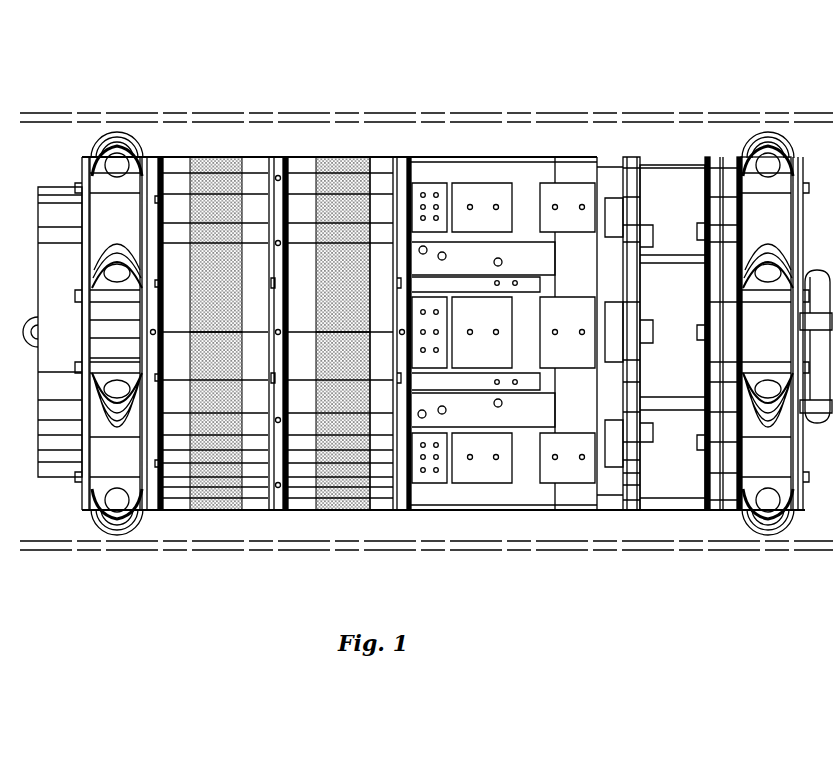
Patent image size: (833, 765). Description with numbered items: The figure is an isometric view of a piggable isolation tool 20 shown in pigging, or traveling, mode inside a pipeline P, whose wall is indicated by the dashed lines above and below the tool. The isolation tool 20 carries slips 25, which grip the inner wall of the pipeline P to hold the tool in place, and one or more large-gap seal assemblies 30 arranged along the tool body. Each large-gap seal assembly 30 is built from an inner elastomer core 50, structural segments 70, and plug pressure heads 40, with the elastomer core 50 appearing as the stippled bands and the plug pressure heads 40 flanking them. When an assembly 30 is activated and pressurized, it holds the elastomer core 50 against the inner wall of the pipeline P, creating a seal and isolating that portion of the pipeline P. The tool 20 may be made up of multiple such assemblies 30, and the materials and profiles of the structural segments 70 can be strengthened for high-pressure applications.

The pipeline P is at (107, 112).
The piggable isolation tool 20 is at (562, 143).
The slips 25 is at (565, 472).
The large-gap seal assembly 30 is at (208, 513).
The plug pressure heads 40 is at (153, 508).
The elastomer core 50 is at (209, 157).
The structural segments 70 is at (381, 172).